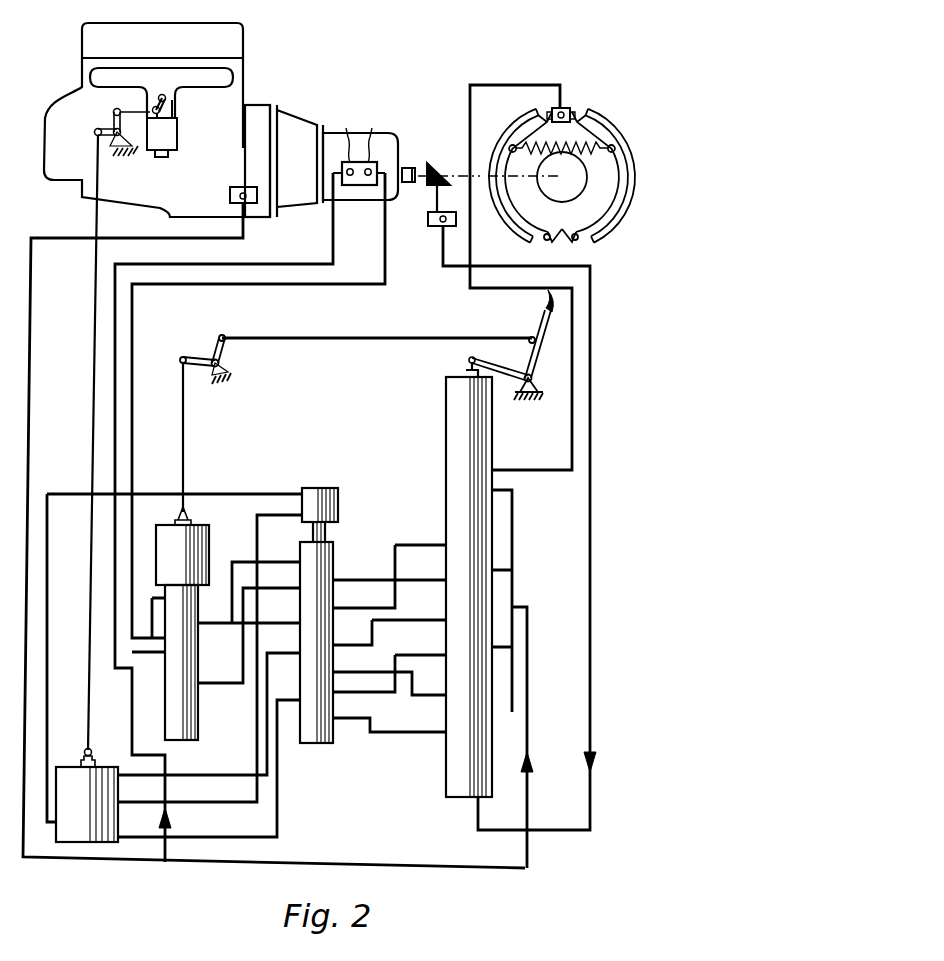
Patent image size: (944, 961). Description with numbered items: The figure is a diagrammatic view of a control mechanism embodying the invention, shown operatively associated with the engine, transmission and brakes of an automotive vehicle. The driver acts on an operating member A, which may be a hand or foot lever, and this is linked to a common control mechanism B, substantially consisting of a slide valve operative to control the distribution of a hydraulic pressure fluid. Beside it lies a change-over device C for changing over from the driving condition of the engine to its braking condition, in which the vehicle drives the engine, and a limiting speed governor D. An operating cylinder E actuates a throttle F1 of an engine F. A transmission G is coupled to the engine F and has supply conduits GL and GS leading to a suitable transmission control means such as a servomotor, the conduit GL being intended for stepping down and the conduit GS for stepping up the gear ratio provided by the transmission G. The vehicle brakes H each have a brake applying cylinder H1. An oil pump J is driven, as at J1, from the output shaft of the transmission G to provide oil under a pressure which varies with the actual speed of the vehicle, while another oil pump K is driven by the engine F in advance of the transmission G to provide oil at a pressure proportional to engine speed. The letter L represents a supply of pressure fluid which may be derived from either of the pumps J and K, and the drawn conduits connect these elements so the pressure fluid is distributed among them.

The engine F is at (262, 113).
The throttle F1 is at (173, 100).
The oil pump K is at (249, 193).
The transmission G is at (362, 197).
The supply conduit GS is at (342, 141).
The supply conduit GL is at (377, 141).
The pump drive J1 is at (433, 167).
The oil pump J is at (435, 226).
The brake applying cylinder H1 is at (572, 112).
The vehicle brakes H is at (610, 236).
The operating member A is at (536, 362).
The common control mechanism B is at (450, 430).
The change-over device C is at (334, 558).
The limiting speed governor D is at (209, 542).
The operating cylinder E is at (70, 767).
The supply of pressure fluid L is at (529, 740).